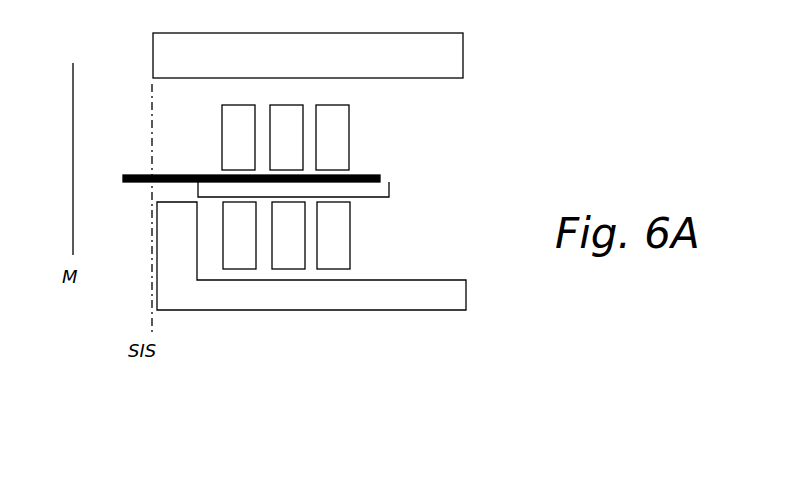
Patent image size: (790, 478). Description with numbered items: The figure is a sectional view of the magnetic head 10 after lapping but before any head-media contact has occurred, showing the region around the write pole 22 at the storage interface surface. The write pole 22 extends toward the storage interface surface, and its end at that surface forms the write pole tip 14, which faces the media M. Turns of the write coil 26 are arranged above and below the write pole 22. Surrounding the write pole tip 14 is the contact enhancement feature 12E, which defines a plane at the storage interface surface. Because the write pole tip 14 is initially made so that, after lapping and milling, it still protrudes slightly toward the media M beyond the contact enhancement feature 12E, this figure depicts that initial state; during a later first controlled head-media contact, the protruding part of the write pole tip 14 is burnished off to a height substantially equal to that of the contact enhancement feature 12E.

The magnetic head 10 is at (585, 148).
The contact enhancement feature 12E is at (153, 52).
The write pole tip 14 is at (127, 174).
The write pole 22 is at (165, 176).
The write coil 26 is at (334, 137).